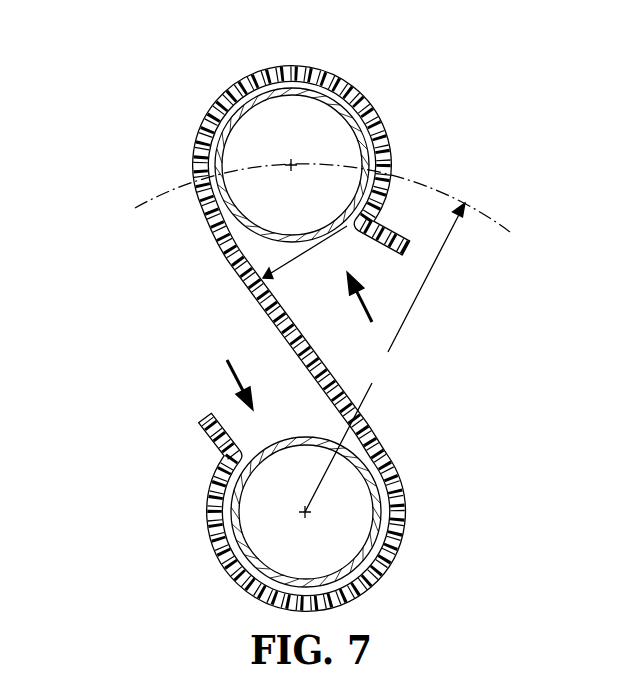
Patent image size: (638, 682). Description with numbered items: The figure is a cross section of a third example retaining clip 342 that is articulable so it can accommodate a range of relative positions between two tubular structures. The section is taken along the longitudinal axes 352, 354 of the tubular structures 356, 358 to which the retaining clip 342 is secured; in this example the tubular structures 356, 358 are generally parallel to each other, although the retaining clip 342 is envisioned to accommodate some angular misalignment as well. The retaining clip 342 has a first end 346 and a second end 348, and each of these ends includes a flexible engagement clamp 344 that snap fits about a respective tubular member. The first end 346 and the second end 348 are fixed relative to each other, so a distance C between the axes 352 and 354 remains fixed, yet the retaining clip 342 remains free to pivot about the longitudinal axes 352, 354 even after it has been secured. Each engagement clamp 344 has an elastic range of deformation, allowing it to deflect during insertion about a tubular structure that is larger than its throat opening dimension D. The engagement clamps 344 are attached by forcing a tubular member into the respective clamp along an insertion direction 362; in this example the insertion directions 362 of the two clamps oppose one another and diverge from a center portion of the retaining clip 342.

The retaining clip 342 is at (287, 307).
The flexible engagement clamp 344 is at (412, 237).
The first end 346 is at (190, 148).
The second end 348 is at (405, 487).
The longitudinal axis 352 is at (290, 165).
The longitudinal axis 354 is at (304, 512).
The tubular structure 356 is at (214, 248).
The tubular structure 358 is at (403, 566).
The insertion direction 362 is at (367, 318).
The distance C is at (385, 357).
The throat opening dimension D is at (297, 236).